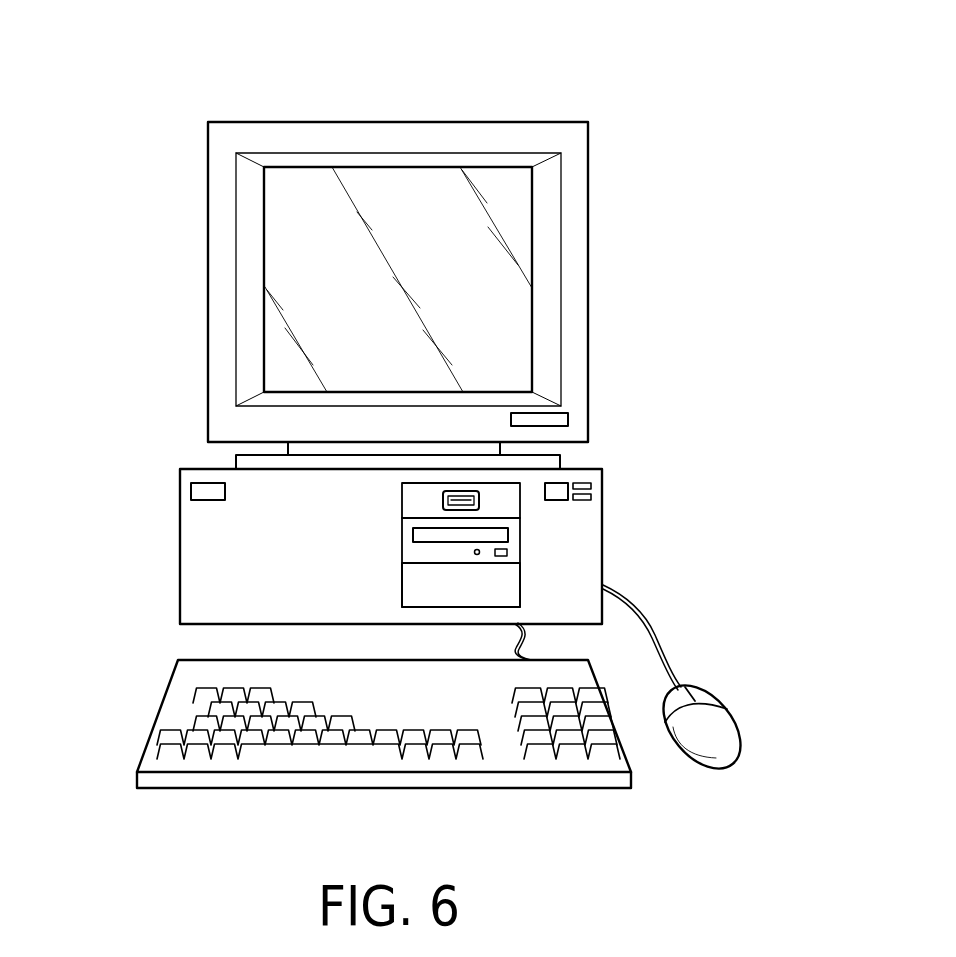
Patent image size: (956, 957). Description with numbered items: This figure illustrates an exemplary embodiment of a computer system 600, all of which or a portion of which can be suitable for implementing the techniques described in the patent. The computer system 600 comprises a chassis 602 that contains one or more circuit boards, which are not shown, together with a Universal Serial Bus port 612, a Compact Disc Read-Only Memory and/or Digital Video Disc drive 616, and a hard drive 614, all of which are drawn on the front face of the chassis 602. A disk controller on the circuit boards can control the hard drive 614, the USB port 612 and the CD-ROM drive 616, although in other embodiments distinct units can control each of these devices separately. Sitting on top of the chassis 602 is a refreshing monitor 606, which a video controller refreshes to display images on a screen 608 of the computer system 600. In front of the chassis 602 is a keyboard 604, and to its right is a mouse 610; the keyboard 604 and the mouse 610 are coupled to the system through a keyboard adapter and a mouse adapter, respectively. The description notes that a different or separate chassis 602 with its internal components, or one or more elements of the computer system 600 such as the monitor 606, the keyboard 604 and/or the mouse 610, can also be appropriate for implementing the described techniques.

The computer system 600 is at (578, 100).
The chassis 602 is at (180, 548).
The keyboard 604 is at (160, 709).
The refreshing monitor 606 is at (283, 122).
The screen 608 is at (313, 285).
The mouse 610 is at (720, 717).
The Universal Serial Bus (USB) port 612 is at (480, 497).
The hard drive 614 is at (510, 583).
The Compact Disc Read-Only Memory (CD-ROM) and/or Digital Video Disc (DVD) drive 616 is at (510, 540).